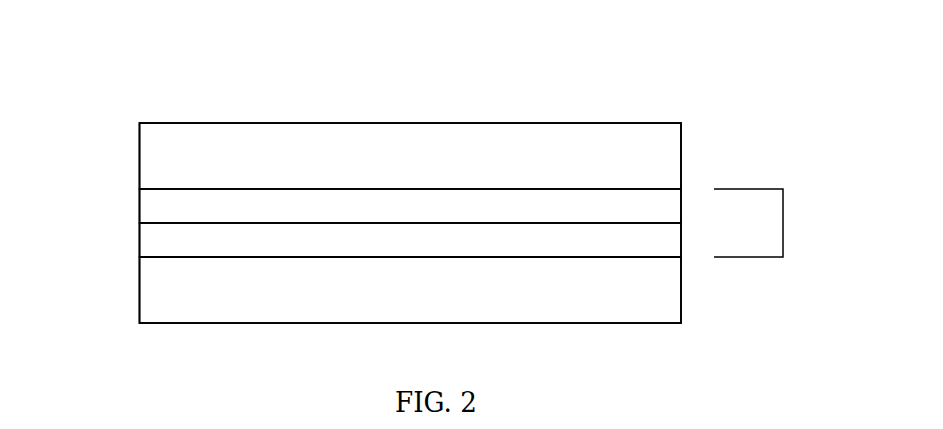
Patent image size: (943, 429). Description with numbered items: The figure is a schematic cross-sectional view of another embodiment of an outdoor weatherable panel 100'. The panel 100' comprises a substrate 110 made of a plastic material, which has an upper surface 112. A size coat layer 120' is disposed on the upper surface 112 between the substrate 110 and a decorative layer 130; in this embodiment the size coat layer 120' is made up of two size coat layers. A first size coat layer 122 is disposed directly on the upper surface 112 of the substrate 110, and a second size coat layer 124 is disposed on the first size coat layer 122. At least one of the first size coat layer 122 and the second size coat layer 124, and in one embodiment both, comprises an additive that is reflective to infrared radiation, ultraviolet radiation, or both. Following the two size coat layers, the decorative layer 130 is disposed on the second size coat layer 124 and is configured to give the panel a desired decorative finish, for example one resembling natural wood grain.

The outdoor weatherable panel 100' is at (411, 176).
The substrate 110 is at (681, 292).
The upper surface 112 is at (173, 258).
The size coat layer 120' is at (788, 223).
The first size coat layer 122 is at (139, 241).
The second size coat layer 124 is at (139, 205).
The decorative layer 130 is at (681, 155).